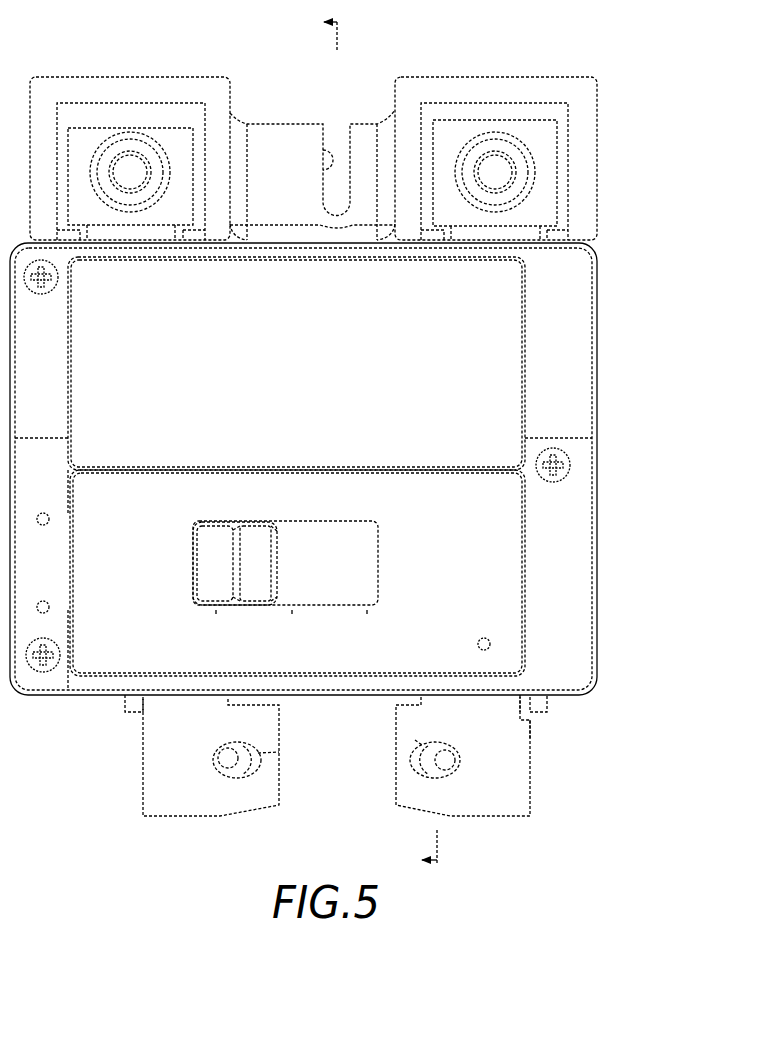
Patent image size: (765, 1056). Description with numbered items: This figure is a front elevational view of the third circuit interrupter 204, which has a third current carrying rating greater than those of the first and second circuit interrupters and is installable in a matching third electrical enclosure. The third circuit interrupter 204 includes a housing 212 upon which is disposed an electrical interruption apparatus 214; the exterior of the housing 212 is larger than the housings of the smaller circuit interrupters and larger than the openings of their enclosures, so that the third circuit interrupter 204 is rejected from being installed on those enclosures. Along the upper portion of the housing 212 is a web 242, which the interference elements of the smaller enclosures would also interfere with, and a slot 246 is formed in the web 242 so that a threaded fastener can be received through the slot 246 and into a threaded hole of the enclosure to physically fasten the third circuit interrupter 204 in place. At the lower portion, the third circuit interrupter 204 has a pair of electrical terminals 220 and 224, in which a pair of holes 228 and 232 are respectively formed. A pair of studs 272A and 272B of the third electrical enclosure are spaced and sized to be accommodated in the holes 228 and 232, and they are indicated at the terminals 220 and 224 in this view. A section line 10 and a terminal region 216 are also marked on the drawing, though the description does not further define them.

The section line 10 is at (399, 440).
The third circuit interrupter 204 is at (618, 242).
The housing 212 is at (598, 345).
The electrical interruption apparatus 214 is at (534, 818).
The terminal 216 is at (275, 124).
The electrical terminal 220 is at (143, 778).
The electrical terminal 224 is at (531, 740).
The hole 228 is at (215, 768).
The hole 232 is at (447, 776).
The web 242 is at (296, 124).
The slot 246 is at (336, 166).
The stud 272A is at (283, 760).
The stud 272B is at (415, 740).